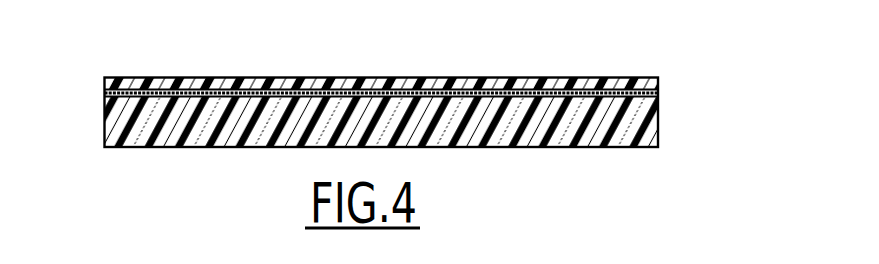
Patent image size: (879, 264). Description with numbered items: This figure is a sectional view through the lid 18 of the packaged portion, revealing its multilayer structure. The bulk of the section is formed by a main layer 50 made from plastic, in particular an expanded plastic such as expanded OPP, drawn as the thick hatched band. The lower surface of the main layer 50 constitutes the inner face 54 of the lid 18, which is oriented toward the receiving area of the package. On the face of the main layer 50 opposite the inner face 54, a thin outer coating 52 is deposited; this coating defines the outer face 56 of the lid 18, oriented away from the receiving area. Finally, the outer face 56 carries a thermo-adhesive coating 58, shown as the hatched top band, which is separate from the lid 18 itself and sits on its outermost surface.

The lid 18 is at (394, 102).
The main layer 50 is at (382, 146).
The outer coating 52 is at (132, 96).
The inner face 54 is at (503, 140).
The outer face 56 is at (320, 90).
The thermo-adhesive coating 58 is at (157, 84).